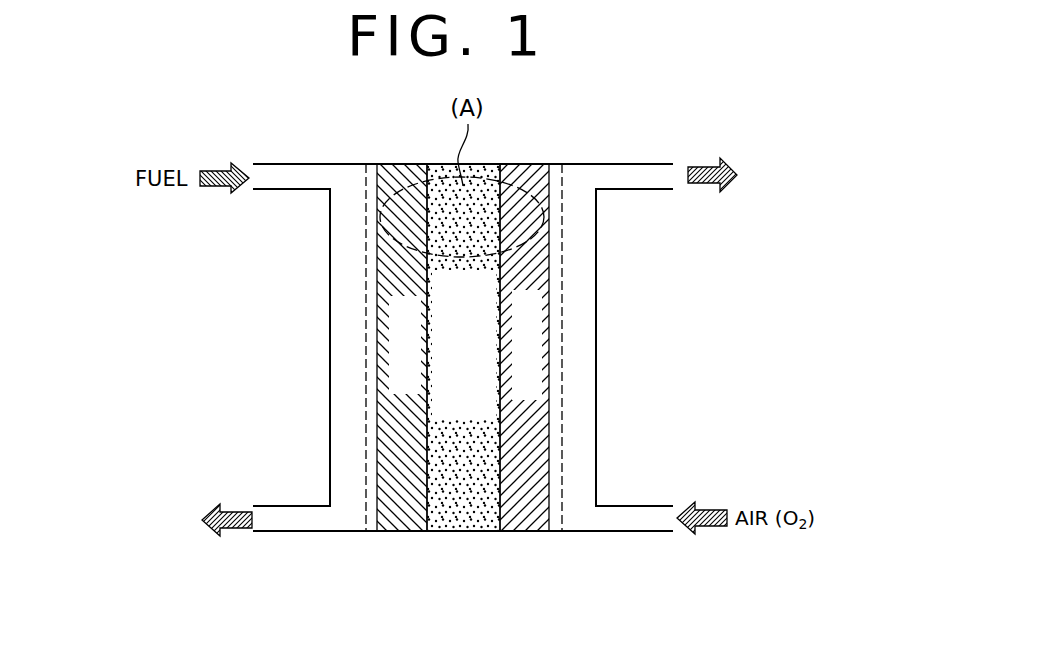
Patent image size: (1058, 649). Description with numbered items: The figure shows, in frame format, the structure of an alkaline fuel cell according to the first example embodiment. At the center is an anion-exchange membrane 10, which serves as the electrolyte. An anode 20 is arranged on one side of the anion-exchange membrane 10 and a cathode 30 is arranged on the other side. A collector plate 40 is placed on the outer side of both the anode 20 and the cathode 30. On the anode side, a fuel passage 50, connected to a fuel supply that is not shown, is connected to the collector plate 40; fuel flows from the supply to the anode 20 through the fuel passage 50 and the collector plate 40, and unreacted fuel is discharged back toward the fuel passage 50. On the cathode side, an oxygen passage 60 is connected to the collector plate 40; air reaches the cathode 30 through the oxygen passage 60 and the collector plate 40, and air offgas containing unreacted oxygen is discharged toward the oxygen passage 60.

The anion-exchange membrane 10 is at (470, 515).
The anode 20 is at (403, 512).
The cathode 30 is at (525, 515).
The collector plate 40 is at (365, 520).
The fuel passage 50 is at (343, 508).
The oxygen passage 60 is at (581, 510).